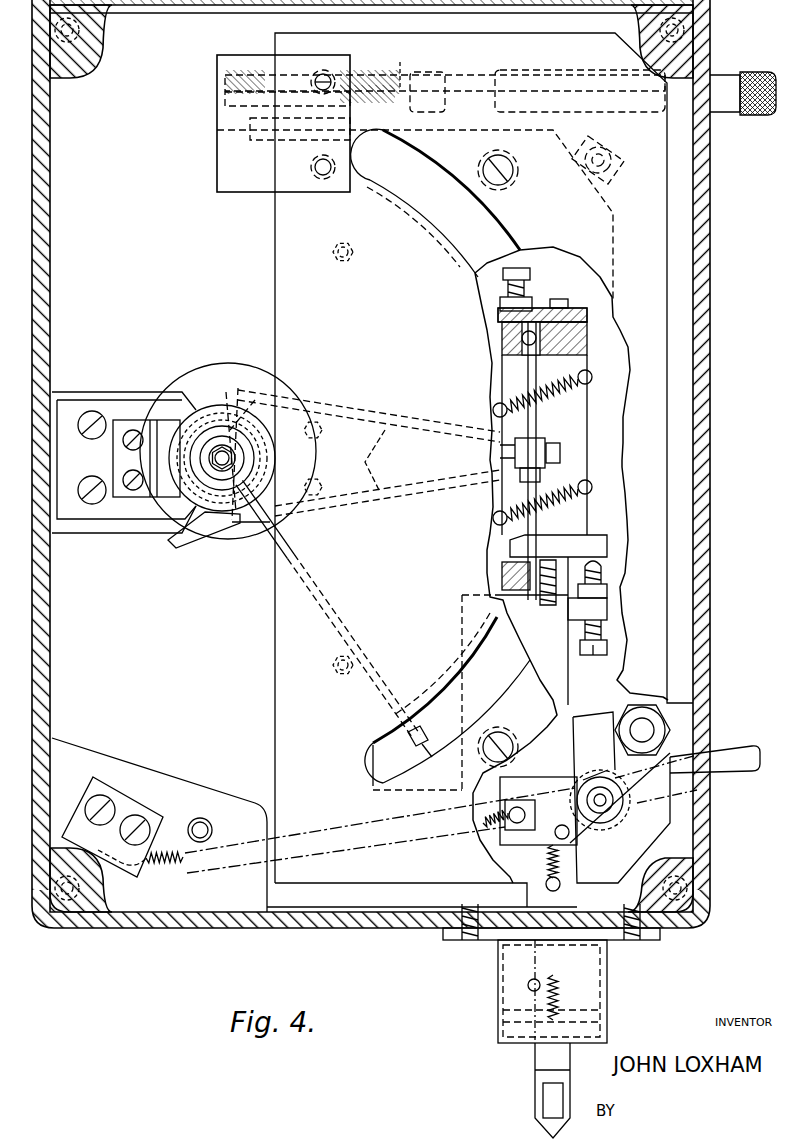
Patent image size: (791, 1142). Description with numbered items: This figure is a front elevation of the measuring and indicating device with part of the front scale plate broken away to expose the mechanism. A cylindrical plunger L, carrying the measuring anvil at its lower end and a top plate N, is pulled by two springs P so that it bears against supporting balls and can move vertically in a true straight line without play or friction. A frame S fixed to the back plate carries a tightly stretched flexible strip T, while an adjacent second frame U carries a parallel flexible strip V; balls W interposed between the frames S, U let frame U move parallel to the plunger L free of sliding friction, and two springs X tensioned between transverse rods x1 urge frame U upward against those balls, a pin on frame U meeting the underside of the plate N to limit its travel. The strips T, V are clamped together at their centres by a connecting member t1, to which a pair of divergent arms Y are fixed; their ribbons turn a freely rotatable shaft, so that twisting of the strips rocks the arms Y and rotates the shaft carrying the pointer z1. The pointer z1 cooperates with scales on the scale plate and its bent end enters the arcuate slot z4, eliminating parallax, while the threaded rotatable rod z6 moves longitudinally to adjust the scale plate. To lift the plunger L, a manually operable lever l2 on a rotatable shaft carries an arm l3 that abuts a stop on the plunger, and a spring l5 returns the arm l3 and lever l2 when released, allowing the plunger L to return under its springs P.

The rotatable rod z6 is at (399, 69).
The slot z4 is at (438, 178).
The pointer z1 is at (424, 732).
The arms Y is at (364, 461).
The second frame U is at (500, 340).
The balls W is at (522, 344).
The frame S is at (587, 338).
The springs X is at (560, 396).
The transverse rods x1 is at (590, 494).
The flexible strip V is at (515, 452).
The flexible strip T is at (560, 459).
The connecting member t1 is at (520, 480).
The top plate N is at (596, 550).
The plunger L is at (566, 575).
The lever l2 is at (732, 760).
The arm l3 is at (605, 826).
The spring l5 is at (562, 840).
The springs P is at (165, 866).